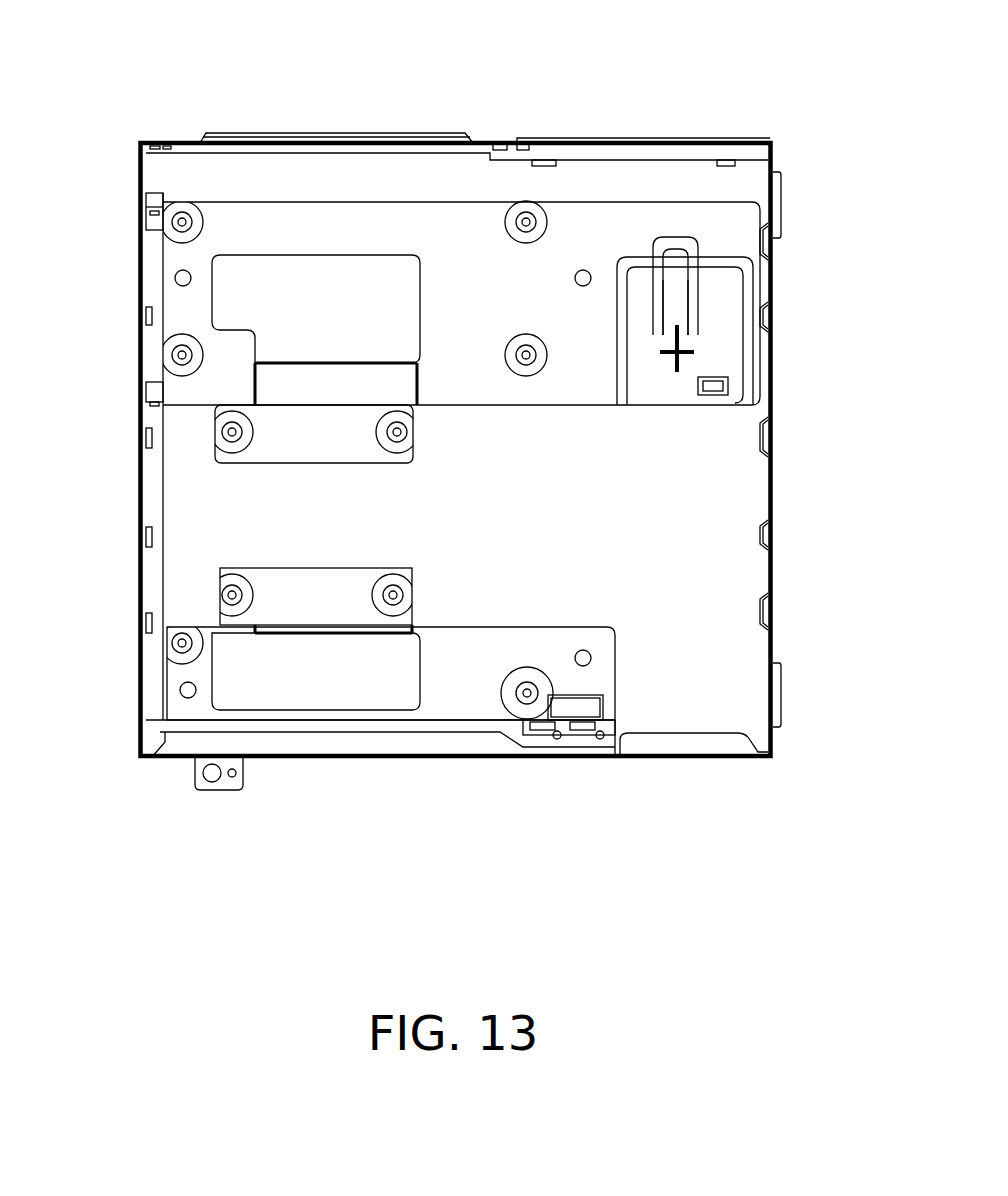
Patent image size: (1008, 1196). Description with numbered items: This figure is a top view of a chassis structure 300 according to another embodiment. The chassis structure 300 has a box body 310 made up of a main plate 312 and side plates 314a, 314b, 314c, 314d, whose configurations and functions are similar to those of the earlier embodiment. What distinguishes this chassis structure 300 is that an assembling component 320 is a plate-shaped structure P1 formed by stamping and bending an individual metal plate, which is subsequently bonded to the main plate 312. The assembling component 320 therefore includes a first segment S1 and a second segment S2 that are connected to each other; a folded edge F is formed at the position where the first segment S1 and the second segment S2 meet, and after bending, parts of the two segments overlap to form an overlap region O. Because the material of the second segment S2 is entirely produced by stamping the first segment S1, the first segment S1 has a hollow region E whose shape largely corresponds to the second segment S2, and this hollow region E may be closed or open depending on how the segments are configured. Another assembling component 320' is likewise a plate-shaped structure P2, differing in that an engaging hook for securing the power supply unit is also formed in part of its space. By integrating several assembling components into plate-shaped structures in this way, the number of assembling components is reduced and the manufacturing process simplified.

The chassis structure 300 is at (848, 908).
The box body 310 is at (797, 541).
The main plate 312 is at (682, 698).
The side plate 314a is at (612, 140).
The side plate 314b is at (500, 760).
The side plate 314c is at (775, 498).
The side plate 314d is at (140, 483).
The assembling component 320 is at (372, 446).
The assembling component 320' is at (745, 321).
The first segment S1 is at (413, 227).
The second segment S2 is at (337, 442).
The hollow region E is at (240, 297).
The folded edge F is at (302, 362).
The overlap region O is at (275, 395).
The plate-shaped structure P1 is at (520, 603).
The plate-shaped structure P2 is at (520, 422).